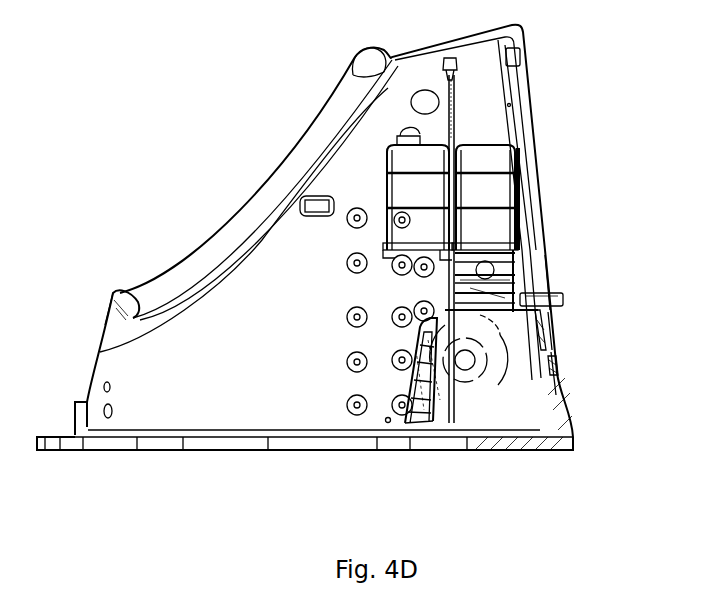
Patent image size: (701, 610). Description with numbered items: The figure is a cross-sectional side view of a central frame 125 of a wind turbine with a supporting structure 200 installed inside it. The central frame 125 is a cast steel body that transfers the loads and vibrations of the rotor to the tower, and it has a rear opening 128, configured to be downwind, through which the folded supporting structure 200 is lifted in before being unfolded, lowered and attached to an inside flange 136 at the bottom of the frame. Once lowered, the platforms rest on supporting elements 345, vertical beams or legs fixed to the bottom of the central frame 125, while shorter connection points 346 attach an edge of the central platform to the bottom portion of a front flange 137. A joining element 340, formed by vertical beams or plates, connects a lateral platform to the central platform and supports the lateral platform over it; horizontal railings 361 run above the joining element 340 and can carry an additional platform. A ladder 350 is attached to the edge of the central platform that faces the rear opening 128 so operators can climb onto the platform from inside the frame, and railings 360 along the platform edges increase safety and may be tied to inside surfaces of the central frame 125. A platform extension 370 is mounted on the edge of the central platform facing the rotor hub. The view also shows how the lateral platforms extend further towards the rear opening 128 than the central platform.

The rear opening 128 is at (248, 170).
The central frame 125 is at (207, 313).
The inside flange 136 is at (520, 448).
The front flange 137 is at (550, 370).
The supporting structure 200 is at (372, 277).
The joining element 340 is at (532, 268).
The supporting element 345 is at (458, 413).
The connection point 346 is at (550, 328).
The ladder 350 is at (412, 396).
The railing 360 is at (418, 208).
The horizontal railing 361 is at (497, 207).
The platform extension 370 is at (565, 299).